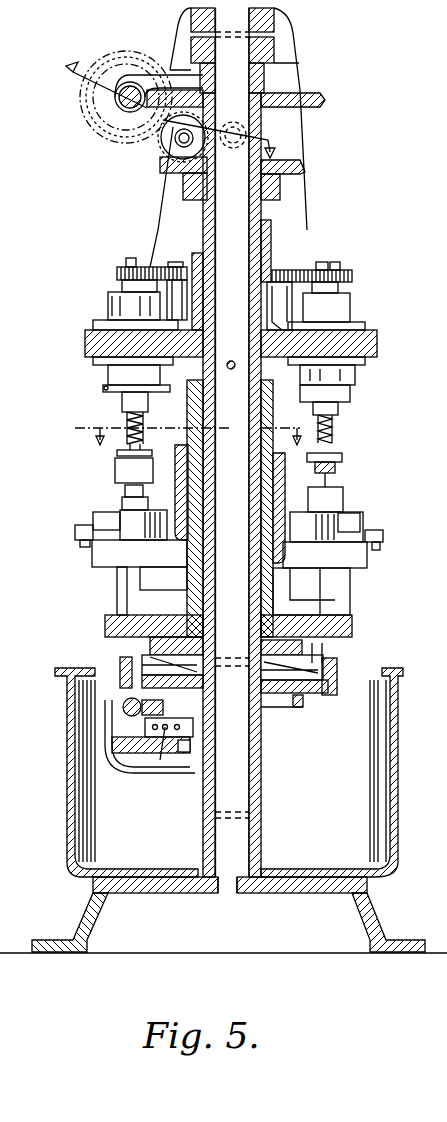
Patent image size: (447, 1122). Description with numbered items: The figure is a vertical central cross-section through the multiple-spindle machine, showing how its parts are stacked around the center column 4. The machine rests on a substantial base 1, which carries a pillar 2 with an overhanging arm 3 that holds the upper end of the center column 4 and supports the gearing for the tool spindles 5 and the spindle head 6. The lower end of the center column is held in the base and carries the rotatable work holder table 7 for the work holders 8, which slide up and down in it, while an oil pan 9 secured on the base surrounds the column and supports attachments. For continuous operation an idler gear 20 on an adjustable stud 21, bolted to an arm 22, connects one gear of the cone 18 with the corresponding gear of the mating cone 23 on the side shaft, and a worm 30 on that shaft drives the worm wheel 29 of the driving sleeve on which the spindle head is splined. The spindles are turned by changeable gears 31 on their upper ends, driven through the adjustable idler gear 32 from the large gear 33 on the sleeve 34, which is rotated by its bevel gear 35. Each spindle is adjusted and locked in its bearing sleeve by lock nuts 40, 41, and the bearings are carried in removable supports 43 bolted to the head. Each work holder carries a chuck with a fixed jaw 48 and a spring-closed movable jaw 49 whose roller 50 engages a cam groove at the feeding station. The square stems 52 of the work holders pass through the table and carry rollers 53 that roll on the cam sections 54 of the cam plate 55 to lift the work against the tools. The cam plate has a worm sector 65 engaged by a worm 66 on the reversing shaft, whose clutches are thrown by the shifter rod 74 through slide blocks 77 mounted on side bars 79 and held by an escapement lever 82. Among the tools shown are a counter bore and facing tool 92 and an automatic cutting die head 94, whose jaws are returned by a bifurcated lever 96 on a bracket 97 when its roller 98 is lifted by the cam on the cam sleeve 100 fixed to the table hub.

The base 1 is at (365, 905).
The pillar 2 is at (160, 208).
The overhanging arm 3 is at (280, 28).
The center column 4 is at (232, 442).
The tool spindle 5 is at (127, 428).
The spindle head 6 is at (377, 348).
The work holder table 7 is at (352, 625).
The work holder 8 is at (370, 575).
The oil pan 9 is at (390, 792).
The cone 18 is at (188, 423).
The idler gear 20 is at (160, 142).
The adjustable stud 21 is at (178, 146).
The arm 22 is at (172, 165).
The mating cone 23 is at (122, 52).
The worm wheel 29 is at (312, 97).
The worm 30 is at (118, 103).
The changeable gears 31 is at (117, 273).
The idler gear 32 is at (170, 280).
The large gear 33 is at (278, 280).
The sleeve 34 is at (203, 225).
The bevel gear 35 is at (300, 165).
The lock nut 40 is at (338, 408).
The lock nut 41 is at (126, 262).
The supports 43 is at (108, 305).
The fixed jaw 48 is at (120, 520).
The movable jaw 49 is at (93, 522).
The roller 50 is at (80, 545).
The stem 52 is at (150, 642).
The roller 53 is at (150, 657).
The cam section 54 is at (120, 662).
The cam plate 55 is at (320, 700).
The worm sector 65 is at (145, 723).
The worm 66 is at (122, 705).
The shifter rod 74 is at (160, 760).
The slide block 77 is at (112, 753).
The side bar 79 is at (112, 740).
The escapement lever 82 is at (182, 752).
The counter bore and facing tool 92 is at (342, 456).
The automatic cutting die head 94 is at (115, 475).
The bifurcated lever 96 is at (115, 455).
The bracket 97 is at (117, 445).
The roller 98 is at (178, 470).
The cam sleeve 100 is at (287, 490).